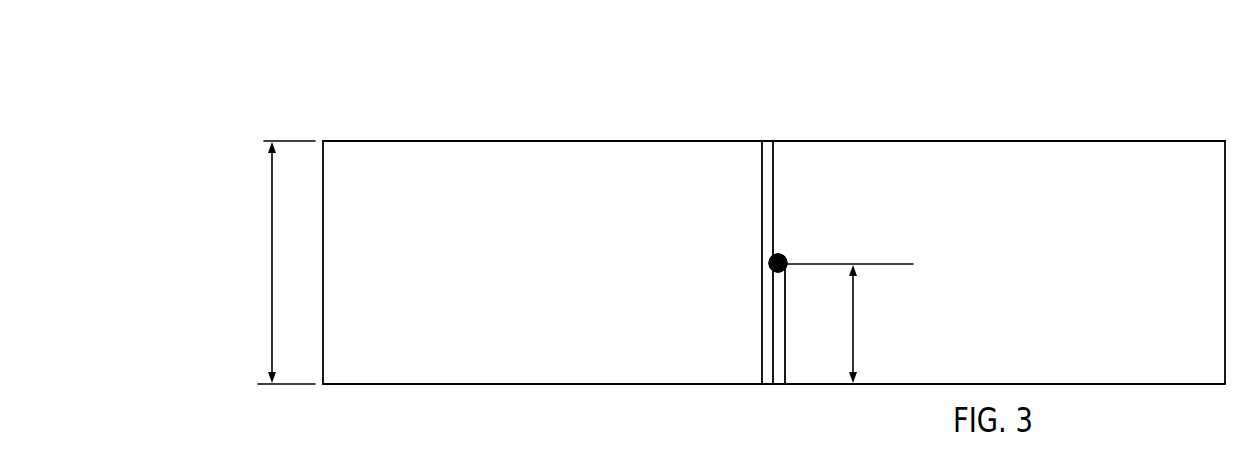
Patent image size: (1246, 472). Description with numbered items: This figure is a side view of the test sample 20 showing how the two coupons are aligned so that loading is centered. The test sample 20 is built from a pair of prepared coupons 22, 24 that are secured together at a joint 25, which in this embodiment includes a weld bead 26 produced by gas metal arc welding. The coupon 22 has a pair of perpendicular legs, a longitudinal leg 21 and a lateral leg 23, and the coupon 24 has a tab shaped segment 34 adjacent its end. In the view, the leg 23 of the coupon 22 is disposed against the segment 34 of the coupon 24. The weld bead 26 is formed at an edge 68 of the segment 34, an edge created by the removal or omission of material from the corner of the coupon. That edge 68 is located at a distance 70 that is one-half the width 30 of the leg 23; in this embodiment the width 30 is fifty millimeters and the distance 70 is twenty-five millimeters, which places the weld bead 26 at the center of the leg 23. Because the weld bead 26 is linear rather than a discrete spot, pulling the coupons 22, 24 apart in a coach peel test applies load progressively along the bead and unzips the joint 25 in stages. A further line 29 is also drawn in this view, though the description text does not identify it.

The test sample 20 is at (919, 108).
The longitudinal leg 21 is at (573, 386).
The coupon 22 is at (593, 132).
The lateral leg 23 is at (769, 146).
The coupon 24 is at (1063, 132).
The joint 25 is at (752, 260).
The weld bead 26 is at (782, 255).
The second edge 29 is at (786, 258).
The width 30 is at (271, 263).
The segment 34 is at (778, 386).
The edge 68 is at (788, 261).
The distance 70 is at (854, 327).